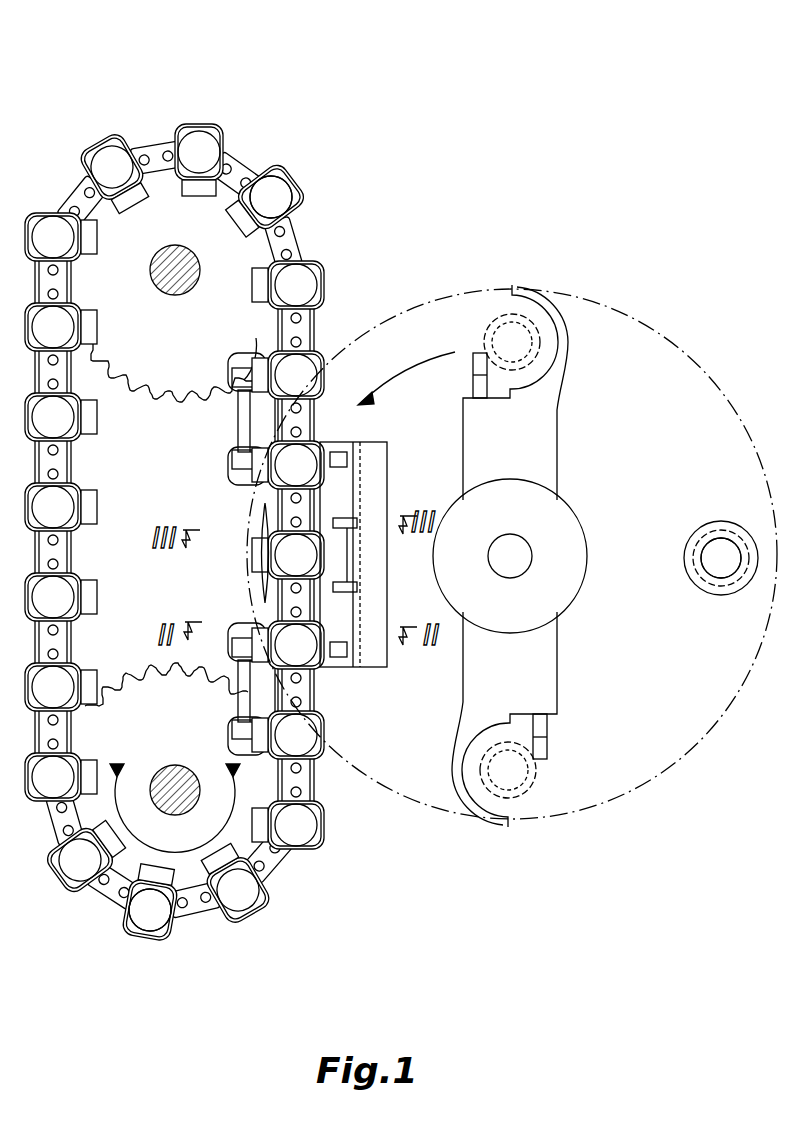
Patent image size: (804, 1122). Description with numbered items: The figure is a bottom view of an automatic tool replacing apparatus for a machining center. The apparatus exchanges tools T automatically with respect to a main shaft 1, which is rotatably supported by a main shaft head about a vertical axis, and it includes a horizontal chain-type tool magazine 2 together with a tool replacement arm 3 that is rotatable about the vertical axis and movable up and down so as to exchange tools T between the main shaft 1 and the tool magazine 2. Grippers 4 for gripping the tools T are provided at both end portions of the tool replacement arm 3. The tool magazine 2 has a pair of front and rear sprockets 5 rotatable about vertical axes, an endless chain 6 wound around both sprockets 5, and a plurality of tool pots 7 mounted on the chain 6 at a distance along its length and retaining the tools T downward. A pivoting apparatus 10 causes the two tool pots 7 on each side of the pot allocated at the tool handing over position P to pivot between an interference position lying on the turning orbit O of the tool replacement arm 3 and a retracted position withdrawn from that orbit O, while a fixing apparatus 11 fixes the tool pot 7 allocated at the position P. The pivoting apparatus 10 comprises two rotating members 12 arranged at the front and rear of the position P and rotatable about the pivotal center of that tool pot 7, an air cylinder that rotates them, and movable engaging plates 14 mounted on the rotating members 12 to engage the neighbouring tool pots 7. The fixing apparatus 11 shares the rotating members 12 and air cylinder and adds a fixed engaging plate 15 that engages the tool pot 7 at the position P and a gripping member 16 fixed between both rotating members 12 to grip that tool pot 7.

The main shaft 1 is at (712, 522).
The tool magazine 2 is at (138, 112).
The tool replacement arm 3 is at (531, 554).
The gripper 4 is at (538, 290).
The sprocket 5 is at (157, 338).
The chain 6 is at (64, 552).
The tool pot 7 is at (44, 205).
The pivoting apparatus 10 is at (390, 572).
The fixing apparatus 11 is at (390, 497).
The rotating member 12 is at (370, 457).
The movable engaging plate 14 is at (240, 418).
The fixed engaging plate 15 is at (263, 587).
The gripping member 16 is at (373, 490).
The tool T is at (248, 220).
The turning orbit O is at (638, 320).
The tool handing over position P is at (335, 552).